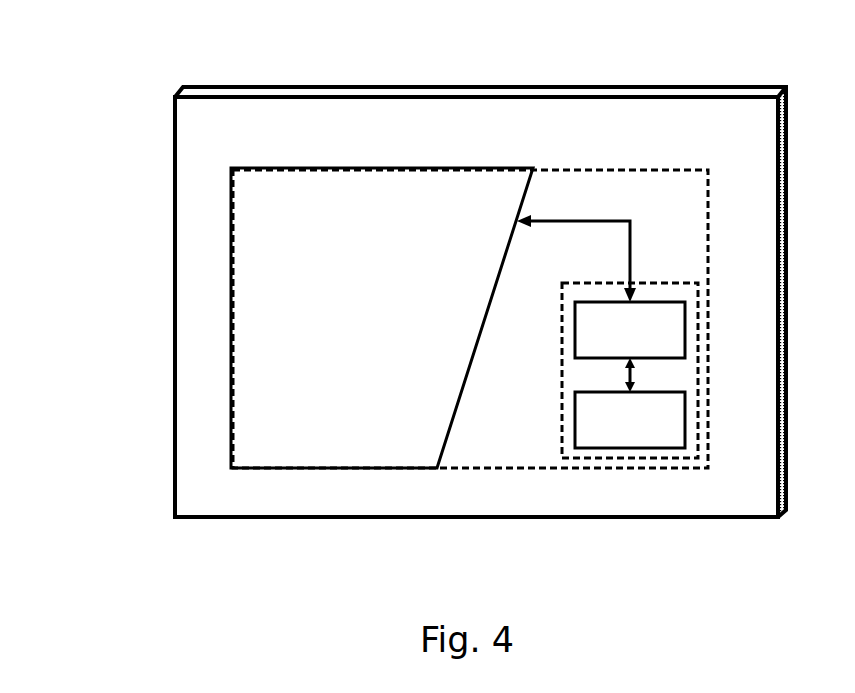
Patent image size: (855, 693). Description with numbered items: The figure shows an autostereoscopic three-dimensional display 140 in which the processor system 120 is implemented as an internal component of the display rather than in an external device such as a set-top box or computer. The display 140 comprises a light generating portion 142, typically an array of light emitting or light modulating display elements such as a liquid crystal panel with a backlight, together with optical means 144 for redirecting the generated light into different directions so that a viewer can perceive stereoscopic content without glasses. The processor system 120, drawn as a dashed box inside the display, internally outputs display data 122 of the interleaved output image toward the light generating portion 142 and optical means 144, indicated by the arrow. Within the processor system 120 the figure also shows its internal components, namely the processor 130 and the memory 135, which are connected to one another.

The 3D display 140 is at (143, 176).
The light generating portion 142 is at (293, 468).
The optical means 144 is at (470, 371).
The processor system 120 is at (562, 405).
The display data 122 is at (630, 250).
The processor 130 is at (630, 330).
The memory 135 is at (630, 420).